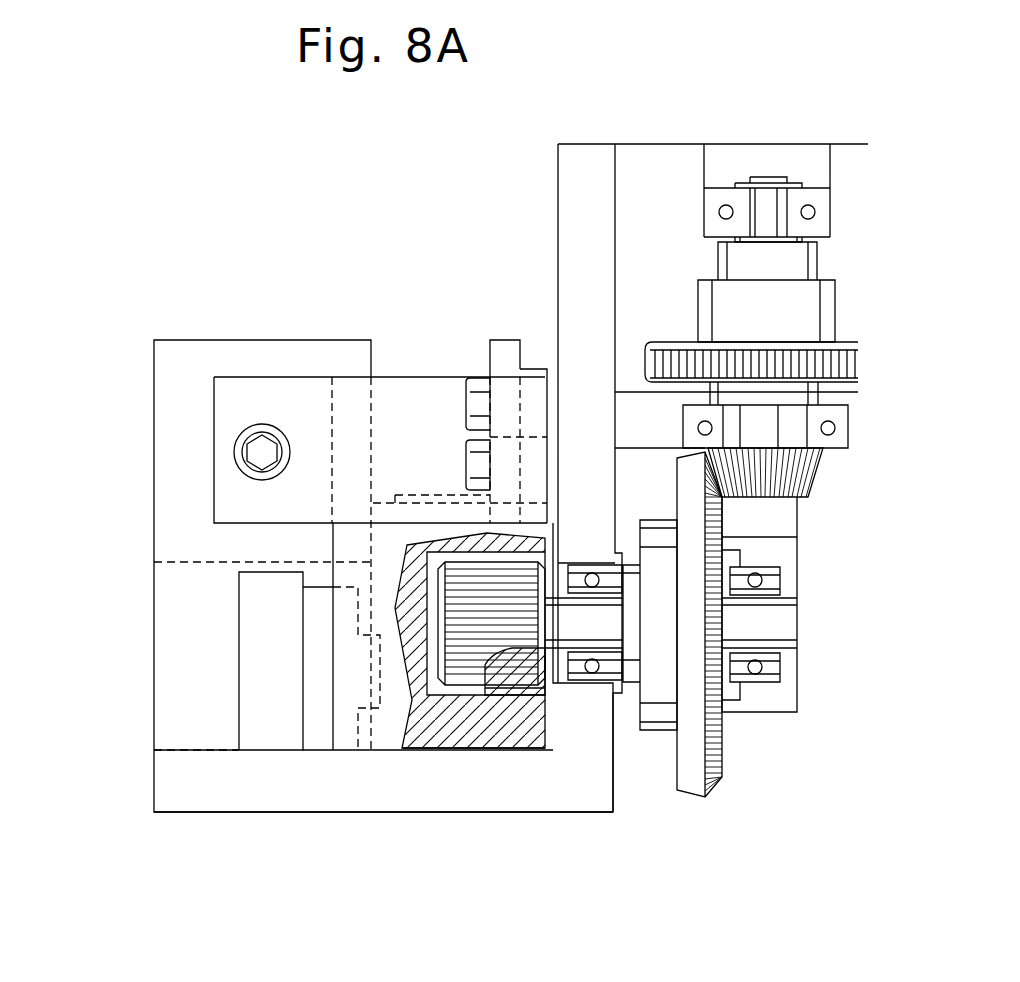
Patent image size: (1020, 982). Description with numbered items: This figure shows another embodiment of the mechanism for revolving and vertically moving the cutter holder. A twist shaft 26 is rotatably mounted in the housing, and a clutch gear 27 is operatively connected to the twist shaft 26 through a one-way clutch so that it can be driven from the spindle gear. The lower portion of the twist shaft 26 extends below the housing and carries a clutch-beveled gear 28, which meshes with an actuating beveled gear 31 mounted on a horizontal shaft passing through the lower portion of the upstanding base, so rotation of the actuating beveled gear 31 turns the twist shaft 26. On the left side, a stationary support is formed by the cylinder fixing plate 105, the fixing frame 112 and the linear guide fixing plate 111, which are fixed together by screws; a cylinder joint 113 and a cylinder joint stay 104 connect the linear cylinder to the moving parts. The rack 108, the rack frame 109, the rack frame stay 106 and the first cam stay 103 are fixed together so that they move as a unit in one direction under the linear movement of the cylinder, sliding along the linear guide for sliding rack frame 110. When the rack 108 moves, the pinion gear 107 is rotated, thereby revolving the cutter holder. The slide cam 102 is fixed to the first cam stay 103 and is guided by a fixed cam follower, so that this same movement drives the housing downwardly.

The twist shaft 26 is at (800, 264).
The clutch gear 27 is at (658, 356).
The clutch-beveled gear 28 is at (803, 472).
The actuating beveled gear 31 is at (720, 767).
The slide cam 102 is at (540, 365).
The first cam stay 103 is at (490, 357).
The cylinder joint stay 104 is at (303, 398).
The cylinder fixing plate 105 is at (182, 355).
The rack frame stay 106 is at (388, 735).
The pinion gear 107 is at (463, 673).
The rack 108 is at (533, 735).
The rack frame 109 is at (445, 735).
The linear guide for sliding rack frame 110 is at (340, 735).
The linear guide fixing plate 111 is at (270, 742).
The fixing frame 112 is at (166, 790).
The cylinder joint 113 is at (258, 455).